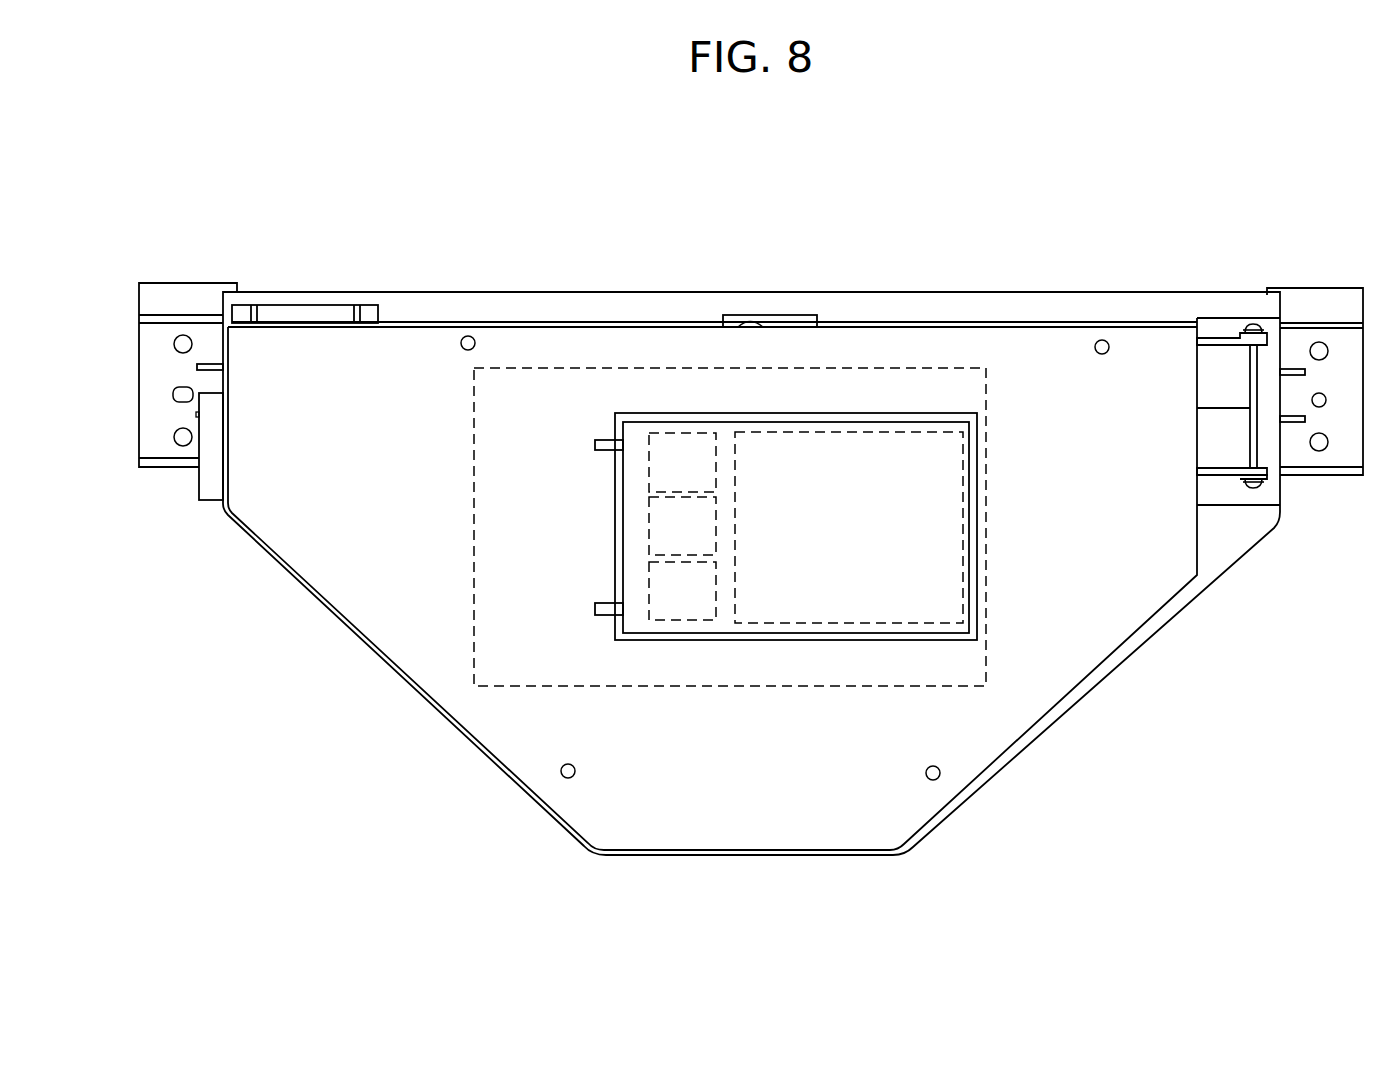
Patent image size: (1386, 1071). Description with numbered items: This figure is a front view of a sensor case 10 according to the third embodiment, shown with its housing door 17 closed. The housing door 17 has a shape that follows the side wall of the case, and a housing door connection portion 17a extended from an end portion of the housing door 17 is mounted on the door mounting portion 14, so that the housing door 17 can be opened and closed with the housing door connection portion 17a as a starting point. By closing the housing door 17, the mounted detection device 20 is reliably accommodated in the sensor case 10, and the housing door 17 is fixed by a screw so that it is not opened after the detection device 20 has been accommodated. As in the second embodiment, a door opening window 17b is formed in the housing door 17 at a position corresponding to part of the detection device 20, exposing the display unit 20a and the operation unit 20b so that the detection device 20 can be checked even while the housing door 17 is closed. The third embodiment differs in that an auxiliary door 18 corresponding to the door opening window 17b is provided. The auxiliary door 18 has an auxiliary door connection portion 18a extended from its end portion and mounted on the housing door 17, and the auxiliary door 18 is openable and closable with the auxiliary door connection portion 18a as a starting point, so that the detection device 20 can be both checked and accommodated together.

The sensor case 10 is at (281, 182).
The door mounting portion 14 is at (1253, 326).
The housing door 17 is at (1050, 352).
The housing door connection portion 17a is at (1213, 343).
The door opening window 17b is at (882, 418).
The auxiliary door 18 is at (635, 440).
The auxiliary door connection portion 18a is at (597, 445).
The detection device 20 is at (616, 670).
The display unit 20a is at (937, 548).
The operation unit 20b is at (690, 603).